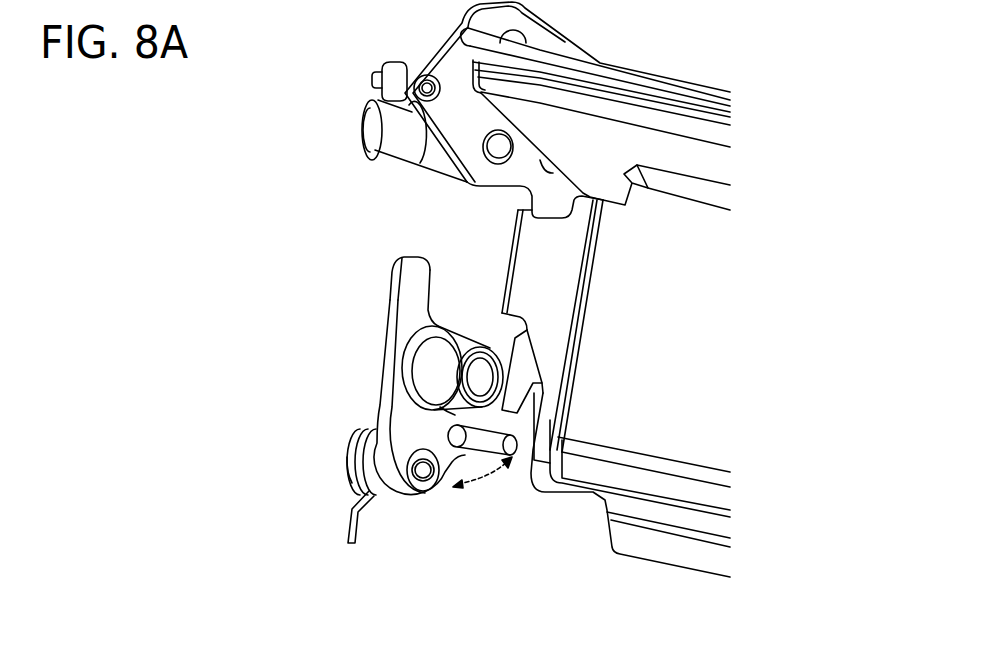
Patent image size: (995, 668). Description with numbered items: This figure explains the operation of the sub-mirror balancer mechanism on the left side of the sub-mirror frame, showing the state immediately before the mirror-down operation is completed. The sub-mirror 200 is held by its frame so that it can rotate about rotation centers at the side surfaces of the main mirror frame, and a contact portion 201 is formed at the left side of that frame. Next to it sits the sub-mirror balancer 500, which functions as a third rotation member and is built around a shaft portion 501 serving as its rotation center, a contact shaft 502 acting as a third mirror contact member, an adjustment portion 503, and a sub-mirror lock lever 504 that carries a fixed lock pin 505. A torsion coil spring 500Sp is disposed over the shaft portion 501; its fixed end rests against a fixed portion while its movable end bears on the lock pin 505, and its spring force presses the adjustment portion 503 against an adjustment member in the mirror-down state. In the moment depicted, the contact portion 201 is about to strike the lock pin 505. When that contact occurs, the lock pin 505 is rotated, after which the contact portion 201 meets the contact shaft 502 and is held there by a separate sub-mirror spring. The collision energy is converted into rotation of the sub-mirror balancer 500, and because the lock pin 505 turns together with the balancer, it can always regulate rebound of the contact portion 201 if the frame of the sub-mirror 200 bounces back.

The sub-mirror 200 is at (622, 397).
The contact portion 201 is at (507, 350).
The sub-mirror balancer 500 is at (410, 310).
The torsion coil spring 500Sp is at (350, 468).
The shaft portion 501 is at (437, 490).
The contact shaft 502 is at (427, 370).
The adjustment portion 503 is at (392, 280).
The sub-mirror lock lever 504 is at (430, 423).
The lock pin 505 is at (440, 407).